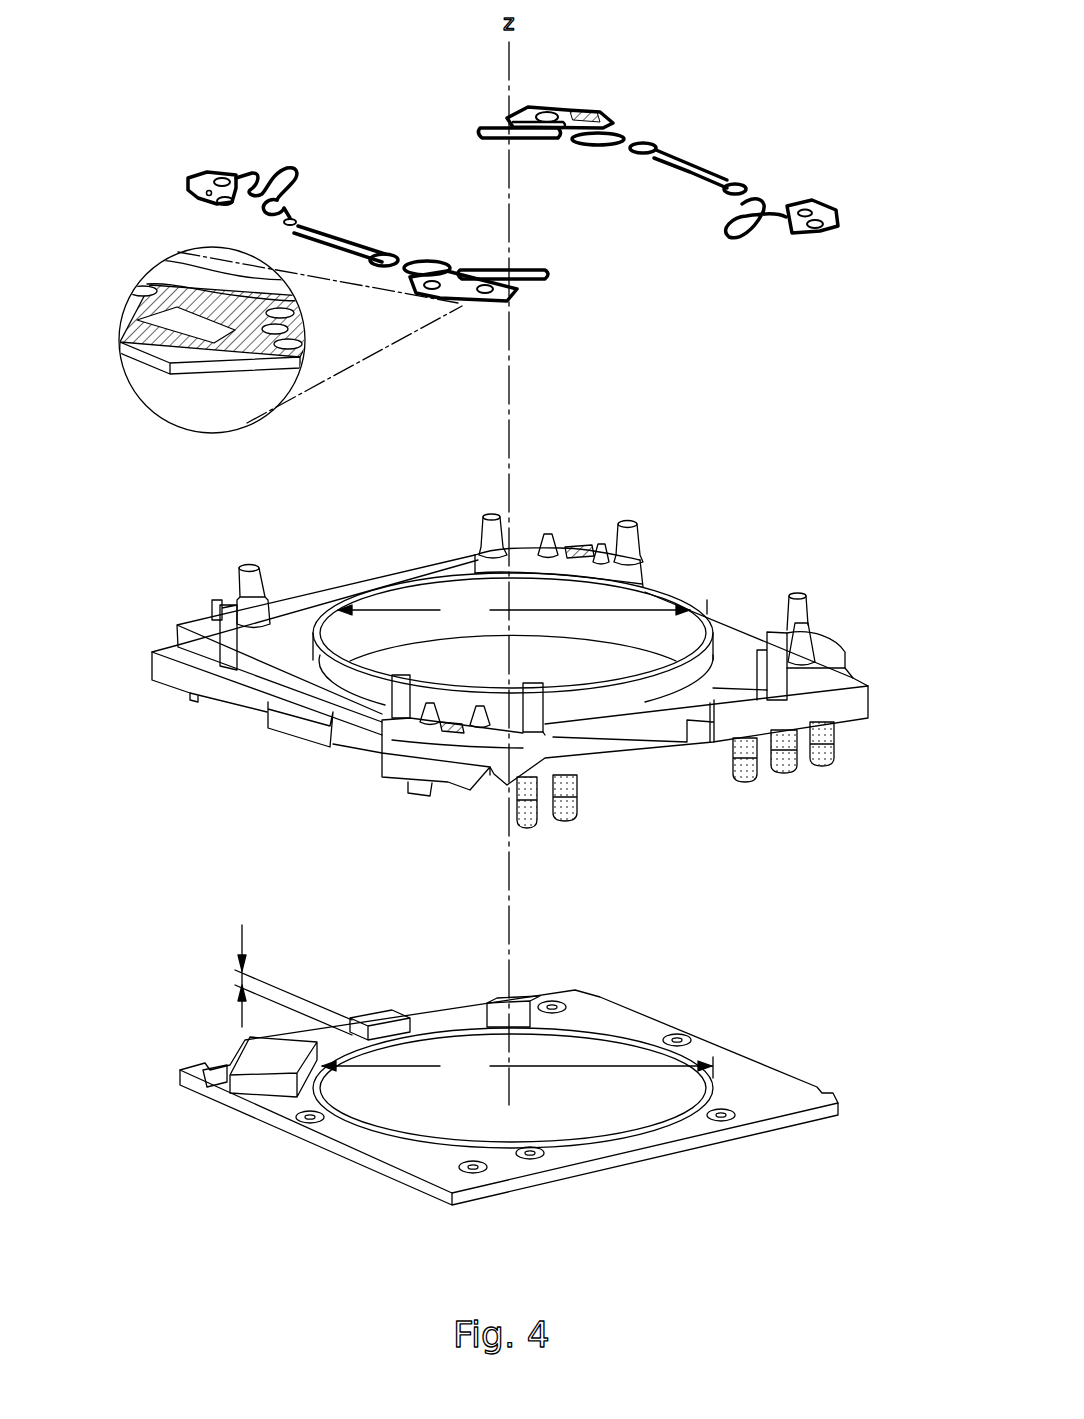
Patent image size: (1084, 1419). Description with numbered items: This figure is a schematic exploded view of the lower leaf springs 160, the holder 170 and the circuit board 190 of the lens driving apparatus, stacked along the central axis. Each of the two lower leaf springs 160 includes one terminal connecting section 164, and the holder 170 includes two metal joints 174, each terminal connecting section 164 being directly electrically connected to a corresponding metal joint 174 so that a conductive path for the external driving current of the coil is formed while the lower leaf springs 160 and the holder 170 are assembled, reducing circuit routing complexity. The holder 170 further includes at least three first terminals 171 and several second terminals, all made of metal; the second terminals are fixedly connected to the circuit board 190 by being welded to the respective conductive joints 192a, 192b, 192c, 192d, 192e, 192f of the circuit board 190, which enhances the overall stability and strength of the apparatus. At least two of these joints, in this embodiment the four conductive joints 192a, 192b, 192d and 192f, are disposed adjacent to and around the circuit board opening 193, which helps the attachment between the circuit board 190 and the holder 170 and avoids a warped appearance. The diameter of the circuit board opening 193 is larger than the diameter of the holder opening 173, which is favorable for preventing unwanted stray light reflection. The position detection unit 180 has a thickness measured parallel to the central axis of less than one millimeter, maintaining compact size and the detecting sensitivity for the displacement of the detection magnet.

The lower leaf spring 160 is at (198, 180).
The terminal connecting section 164 is at (596, 108).
The holder 170 is at (170, 672).
The first terminals 171 is at (838, 755).
The holder opening 173 is at (572, 657).
The metal joints 174 is at (572, 543).
The position detection unit 180 is at (373, 1017).
The circuit board 190 is at (268, 1100).
The conductive joint 192a is at (725, 1118).
The conductive joint 192b is at (536, 1158).
The conductive joint 192c is at (474, 1172).
The conductive joint 192d is at (305, 1122).
The conductive joint 192e is at (552, 1006).
The conductive joint 192f is at (680, 1040).
The circuit board opening 193 is at (608, 1062).